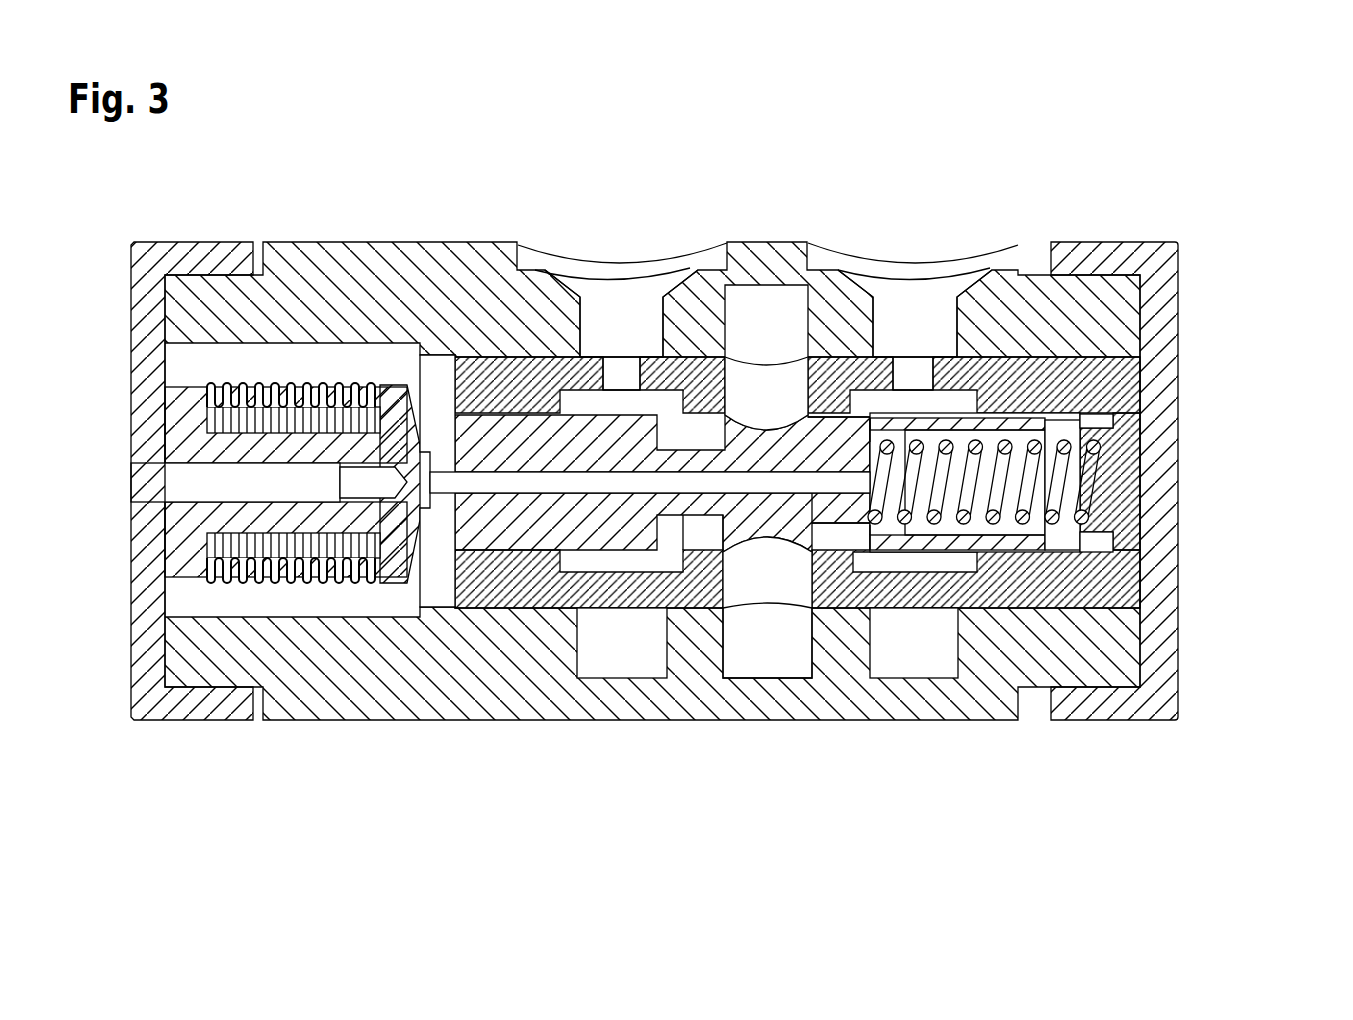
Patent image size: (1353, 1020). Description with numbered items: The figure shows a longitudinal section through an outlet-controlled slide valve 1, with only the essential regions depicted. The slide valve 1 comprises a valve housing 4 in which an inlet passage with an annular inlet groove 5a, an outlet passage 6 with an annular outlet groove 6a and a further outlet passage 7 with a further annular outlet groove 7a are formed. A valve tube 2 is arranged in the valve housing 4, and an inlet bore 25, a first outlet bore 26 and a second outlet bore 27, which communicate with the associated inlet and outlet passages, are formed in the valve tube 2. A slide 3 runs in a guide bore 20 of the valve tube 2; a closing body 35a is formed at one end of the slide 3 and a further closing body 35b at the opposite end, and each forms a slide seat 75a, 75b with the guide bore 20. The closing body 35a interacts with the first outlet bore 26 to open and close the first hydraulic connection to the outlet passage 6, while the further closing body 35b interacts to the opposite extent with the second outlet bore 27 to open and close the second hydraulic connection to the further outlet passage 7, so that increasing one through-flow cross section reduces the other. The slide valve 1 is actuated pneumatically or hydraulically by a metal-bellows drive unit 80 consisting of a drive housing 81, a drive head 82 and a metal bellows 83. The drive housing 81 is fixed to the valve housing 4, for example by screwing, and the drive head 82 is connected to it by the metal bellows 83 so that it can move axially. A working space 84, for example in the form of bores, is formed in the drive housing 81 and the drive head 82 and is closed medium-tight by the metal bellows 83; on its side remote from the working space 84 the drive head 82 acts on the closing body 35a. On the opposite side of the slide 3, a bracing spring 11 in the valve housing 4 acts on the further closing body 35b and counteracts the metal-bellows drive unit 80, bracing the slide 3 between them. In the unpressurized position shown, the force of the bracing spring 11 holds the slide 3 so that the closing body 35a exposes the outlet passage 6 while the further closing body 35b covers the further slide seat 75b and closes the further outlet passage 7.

The slide valve 1 is at (1248, 262).
The valve tube 2 is at (487, 580).
The slide 3 is at (790, 412).
The valve housing 4 is at (397, 262).
The annular inlet groove 5a is at (755, 647).
The outlet passage 6 is at (610, 317).
The annular outlet groove 6a is at (615, 647).
The further outlet passage 7 is at (898, 317).
The further annular outlet groove 7a is at (913, 647).
The bracing spring 11 is at (1005, 435).
The guide bore 20 is at (708, 525).
The inlet bore 25 is at (770, 577).
The first outlet bore 26 is at (625, 380).
The second outlet bore 27 is at (913, 380).
The closing body 35a is at (547, 533).
The further closing body 35b is at (860, 533).
The slide seat 75a is at (540, 440).
The further slide seat 75b is at (868, 425).
The metal-bellows drive unit 80 is at (314, 318).
The drive housing 81 is at (145, 700).
The drive head 82 is at (385, 530).
The metal bellows 83 is at (220, 578).
The working space 84 is at (263, 488).